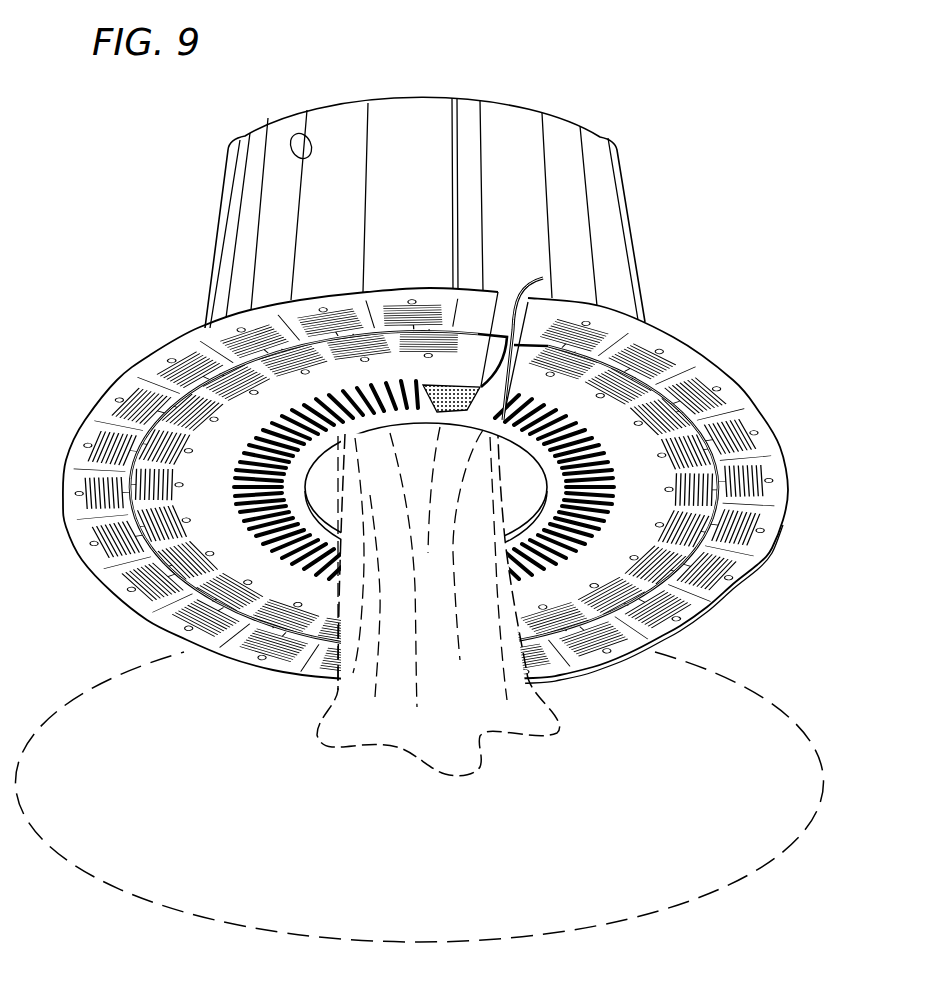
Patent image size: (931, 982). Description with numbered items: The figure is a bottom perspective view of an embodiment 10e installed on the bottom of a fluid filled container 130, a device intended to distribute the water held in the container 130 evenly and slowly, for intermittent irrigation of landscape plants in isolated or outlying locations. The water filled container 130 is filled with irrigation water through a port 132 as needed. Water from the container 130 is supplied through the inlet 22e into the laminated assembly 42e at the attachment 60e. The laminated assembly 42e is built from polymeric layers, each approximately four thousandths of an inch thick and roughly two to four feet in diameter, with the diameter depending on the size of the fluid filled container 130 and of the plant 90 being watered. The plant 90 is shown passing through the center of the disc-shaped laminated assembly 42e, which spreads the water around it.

The fluid filled container 130 is at (622, 224).
The port 132 is at (293, 140).
The embodiment 10e is at (188, 316).
The laminated assembly 42e is at (697, 374).
The inlet 22e is at (521, 396).
The attachment 60e is at (543, 278).
The plant 90 is at (322, 748).